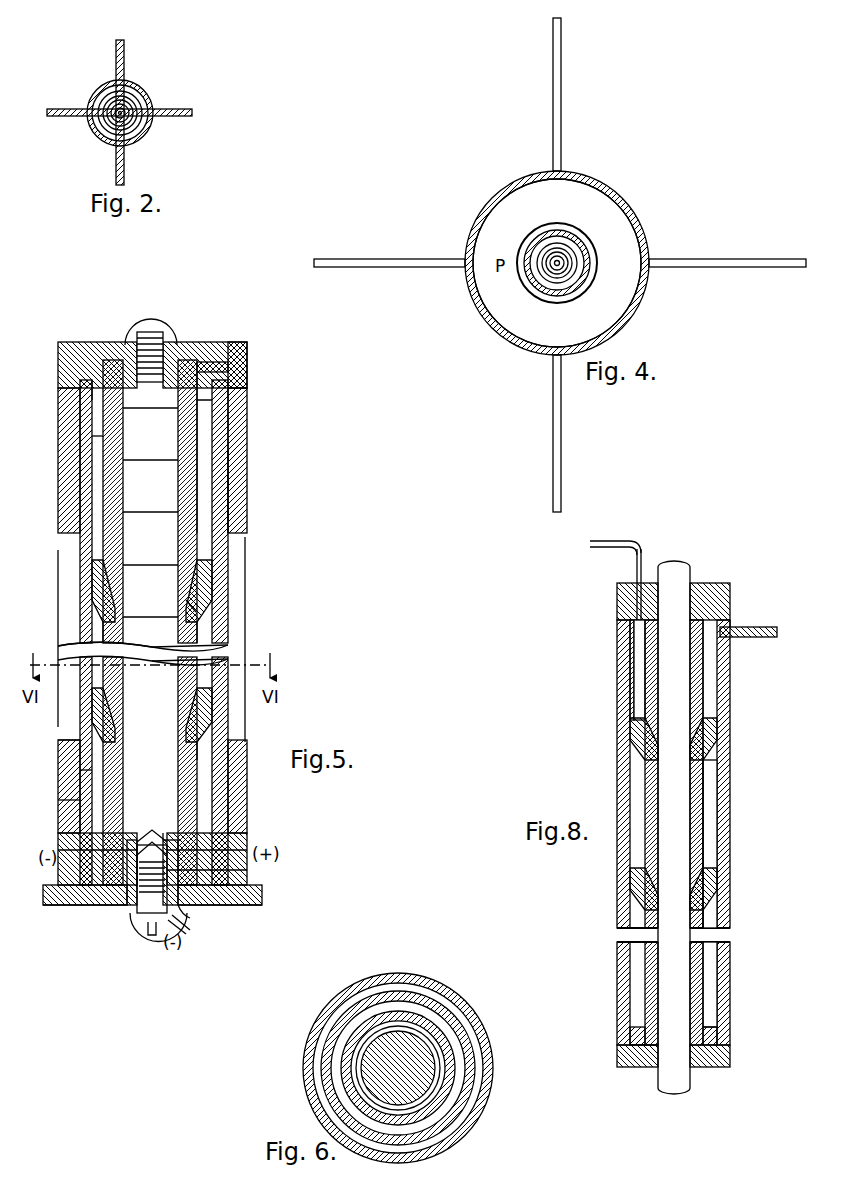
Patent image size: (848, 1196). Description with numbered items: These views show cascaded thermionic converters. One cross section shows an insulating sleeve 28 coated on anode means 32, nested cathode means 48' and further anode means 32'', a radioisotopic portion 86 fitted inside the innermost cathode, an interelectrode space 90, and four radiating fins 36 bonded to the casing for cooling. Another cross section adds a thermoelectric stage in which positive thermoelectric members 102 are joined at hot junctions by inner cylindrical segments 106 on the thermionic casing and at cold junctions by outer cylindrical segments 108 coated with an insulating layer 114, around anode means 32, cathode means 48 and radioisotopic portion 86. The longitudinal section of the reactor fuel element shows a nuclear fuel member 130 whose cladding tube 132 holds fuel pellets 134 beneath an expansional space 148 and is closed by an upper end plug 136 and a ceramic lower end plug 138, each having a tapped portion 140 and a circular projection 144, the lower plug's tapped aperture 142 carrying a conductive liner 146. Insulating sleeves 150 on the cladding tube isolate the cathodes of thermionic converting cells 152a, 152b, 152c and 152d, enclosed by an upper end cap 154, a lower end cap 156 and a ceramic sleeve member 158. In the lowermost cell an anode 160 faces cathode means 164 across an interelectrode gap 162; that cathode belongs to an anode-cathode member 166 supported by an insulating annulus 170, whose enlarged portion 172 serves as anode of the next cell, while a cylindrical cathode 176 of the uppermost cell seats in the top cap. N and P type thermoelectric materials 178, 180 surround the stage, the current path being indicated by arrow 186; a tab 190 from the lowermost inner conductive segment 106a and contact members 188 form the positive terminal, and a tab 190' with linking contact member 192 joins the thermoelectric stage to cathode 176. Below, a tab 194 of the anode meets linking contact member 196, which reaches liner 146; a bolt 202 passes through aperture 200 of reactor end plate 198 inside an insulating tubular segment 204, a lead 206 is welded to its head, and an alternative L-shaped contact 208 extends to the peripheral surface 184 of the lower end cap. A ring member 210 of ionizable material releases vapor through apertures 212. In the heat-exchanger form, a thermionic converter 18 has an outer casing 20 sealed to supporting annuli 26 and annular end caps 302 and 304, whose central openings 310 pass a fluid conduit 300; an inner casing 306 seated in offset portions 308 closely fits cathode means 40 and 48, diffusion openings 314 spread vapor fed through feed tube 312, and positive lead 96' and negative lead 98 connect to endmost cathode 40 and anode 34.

In FIG. 2, the radiating fins 36 is at (123, 72).
In FIG. 2, the insulating sleeve 28 is at (150, 124).
In FIG. 4, the insulating sleeve 28 is at (578, 285).
In FIG. 2, the cathode means 48' is at (107, 97).
In FIG. 2, the inner tube 32'' is at (142, 99).
In FIG. 2, the interelectrode space 90 is at (107, 120).
In FIG. 8, the interelectrode space 90 is at (636, 661).
In FIG. 2, the radioisotopic portion 86 is at (111, 122).
In FIG. 4, the radioisotopic portion 86 is at (547, 272).
In FIG. 4, the positive thermoelectric member 102 is at (508, 212).
In FIG. 4, the inner cylindrical segment 106 is at (578, 236).
In FIG. 4, the insulating layer 114 is at (646, 230).
In FIG. 4, the outer cylindrical segment 108 is at (648, 252).
In FIG. 4, the anode means 32 is at (584, 263).
In FIG. 8, the anode means 32 is at (606, 832).
In FIG. 4, the cathode means 48 is at (543, 288).
In FIG. 8, the cathode means 48 is at (703, 774).
In FIG. 5, the tapped portion 140 is at (122, 341).
In FIG. 5, the upper end plug 136 is at (176, 348).
In FIG. 5, the upper end cap 154 is at (214, 350).
In FIG. 5, the linking contact member 192 is at (247, 348).
In FIG. 5, the circular projection 144 is at (140, 328).
In FIG. 5, the interelectrode gap 162 is at (68, 484).
In FIG. 5, the anode-cathode member 166 is at (84, 548).
In FIG. 5, the insulating sleeve 150 is at (220, 563).
In FIG. 6, the insulating sleeve 150 is at (422, 1035).
In FIG. 5, the expansional space 148 is at (112, 400).
In FIG. 5, the fuel pellets 134 is at (182, 792).
In FIG. 6, the fuel pellets 134 is at (424, 1055).
In FIG. 5, the N type thermoelectric material 178 is at (80, 405).
In FIG. 5, the P type thermoelectric material 180 is at (80, 436).
In FIG. 5, the tab 190' is at (248, 387).
In FIG. 5, the thermionic converting cell 152a is at (216, 412).
In FIG. 5, the arrow 186 is at (247, 502).
In FIG. 5, the nuclear fuel member 130 is at (95, 572).
In FIG. 5, the cladding tube 132 is at (100, 592).
In FIG. 6, the cladding tube 132 is at (425, 1069).
In FIG. 5, the cylindrical cathode 176 is at (210, 585).
In FIG. 5, the ceramic sleeve member 158 is at (215, 602).
In FIG. 5, the insulating and supporting annulus 170 is at (205, 617).
In FIG. 5, the enlarged portion 172 is at (85, 648).
In FIG. 6, the enlarged portion 172 is at (345, 1008).
In FIG. 5, the thermionic converting cell 152b is at (228, 636).
In FIG. 5, the thermionic converting cell 152c is at (228, 651).
In FIG. 6, the thermionic converting cell 152c is at (334, 1040).
In FIG. 5, the apertures 212 is at (108, 722).
In FIG. 5, the ring member 210 is at (192, 726).
In FIG. 5, the thermionic converting cell 152d is at (215, 736).
In FIG. 5, the cathode means 164 is at (75, 748).
In FIG. 5, the anode 160 is at (80, 776).
In FIG. 5, the lowermost inner conductive segment 106a is at (70, 806).
In FIG. 5, the lateral periphery 184 is at (62, 838).
In FIG. 5, the L-shaped contact 208 is at (62, 852).
In FIG. 5, the tab 190 is at (227, 847).
In FIG. 5, the contact members 188 is at (236, 849).
In FIG. 5, the tab 194 is at (240, 879).
In FIG. 5, the end plate 198 is at (55, 898).
In FIG. 5, the lower end cap 156 is at (80, 906).
In FIG. 5, the linking contact member 196 is at (222, 906).
In FIG. 5, the lower end plug 138 is at (128, 906).
In FIG. 5, the tapped aperture 142 is at (148, 842).
In FIG. 5, the conductive liner 146 is at (172, 845).
In FIG. 5, the bolt 202 is at (150, 941).
In FIG. 5, the insulating flanged tubular segment 204 is at (132, 930).
In FIG. 5, the lead 206 is at (186, 935).
In FIG. 5, the aperture 200 is at (185, 912).
In FIG. 8, the fluid conduit 300 is at (688, 566).
In FIG. 8, the end cap 302 is at (702, 592).
In FIG. 8, the offset portions 308 is at (716, 603).
In FIG. 8, the thermionic converter 18 is at (753, 614).
In FIG. 8, the negative lead 98 is at (782, 655).
In FIG. 8, the anode means 34 is at (620, 652).
In FIG. 8, the diffusion openings 314 is at (712, 722).
In FIG. 8, the insulating supporting annuli 26 is at (722, 740).
In FIG. 8, the insulating casing 20 is at (744, 832).
In FIG. 8, the inner casing member 306 is at (706, 810).
In FIG. 8, the cathode means 40 is at (648, 968).
In FIG. 8, the end cap 304 is at (726, 1036).
In FIG. 8, the positive lead 96' is at (619, 1036).
In FIG. 8, the central opening 310 is at (652, 583).
In FIG. 8, the feed tube 312 is at (612, 553).